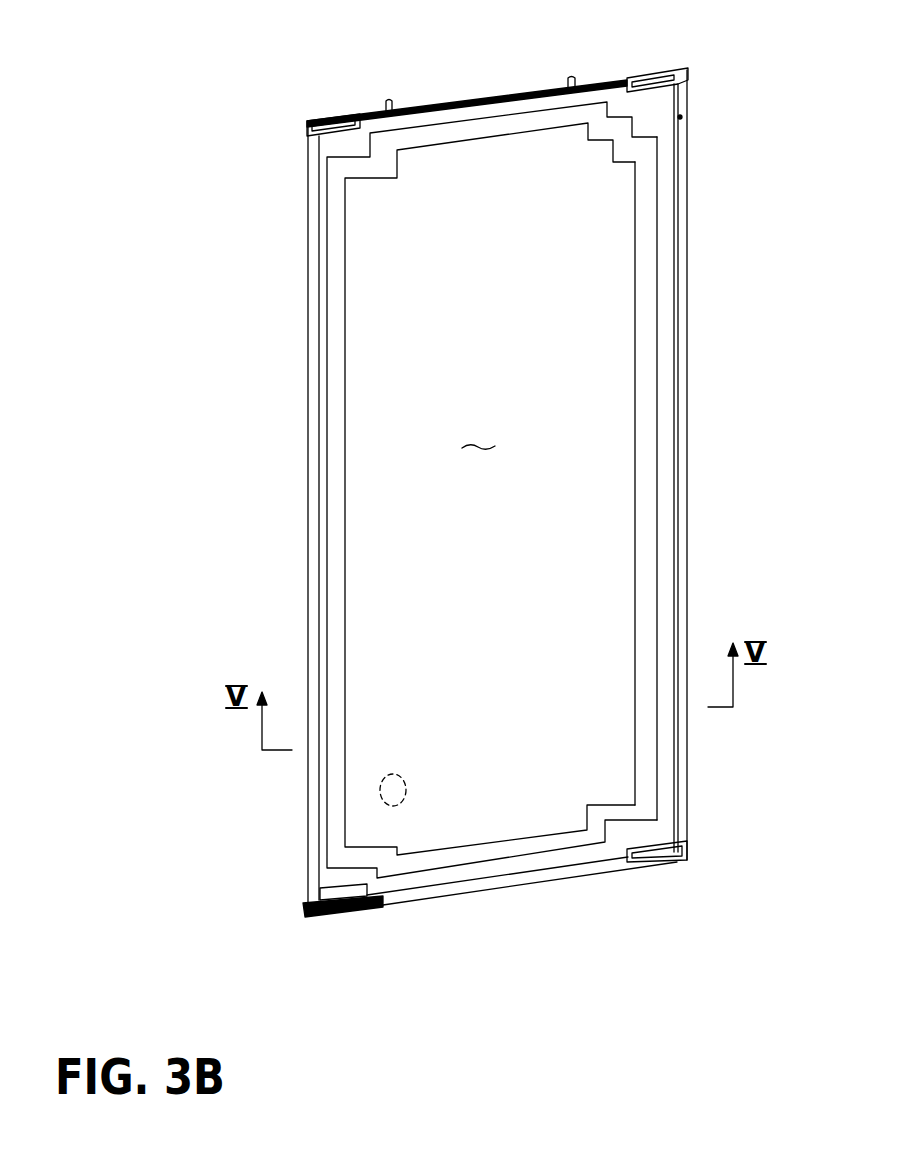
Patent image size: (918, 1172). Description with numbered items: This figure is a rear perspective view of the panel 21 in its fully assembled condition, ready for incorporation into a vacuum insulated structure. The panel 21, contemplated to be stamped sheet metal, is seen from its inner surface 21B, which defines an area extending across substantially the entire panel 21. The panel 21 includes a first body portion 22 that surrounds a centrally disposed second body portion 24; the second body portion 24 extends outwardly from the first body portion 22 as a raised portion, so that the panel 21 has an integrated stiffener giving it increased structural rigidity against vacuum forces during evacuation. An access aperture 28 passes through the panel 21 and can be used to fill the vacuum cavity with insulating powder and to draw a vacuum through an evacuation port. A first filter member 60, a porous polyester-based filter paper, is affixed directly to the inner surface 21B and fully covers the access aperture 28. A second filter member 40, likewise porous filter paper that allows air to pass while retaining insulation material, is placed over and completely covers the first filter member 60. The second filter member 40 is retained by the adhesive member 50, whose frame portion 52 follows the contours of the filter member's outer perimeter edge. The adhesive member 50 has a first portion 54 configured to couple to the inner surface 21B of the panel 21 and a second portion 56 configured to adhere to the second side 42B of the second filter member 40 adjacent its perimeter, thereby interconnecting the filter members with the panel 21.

The panel 21 is at (352, 97).
The inner surface 21B is at (461, 115).
The first body portion 22 is at (342, 143).
The second body portion 24 is at (495, 185).
The access aperture 28 is at (380, 792).
The second filter member 40 is at (568, 323).
The second side 42B is at (480, 434).
The adhesive member 50 is at (657, 418).
The frame portion 52 is at (645, 513).
The first portion 54 is at (657, 487).
The second portion 56 is at (637, 521).
The first filter member 60 is at (440, 269).